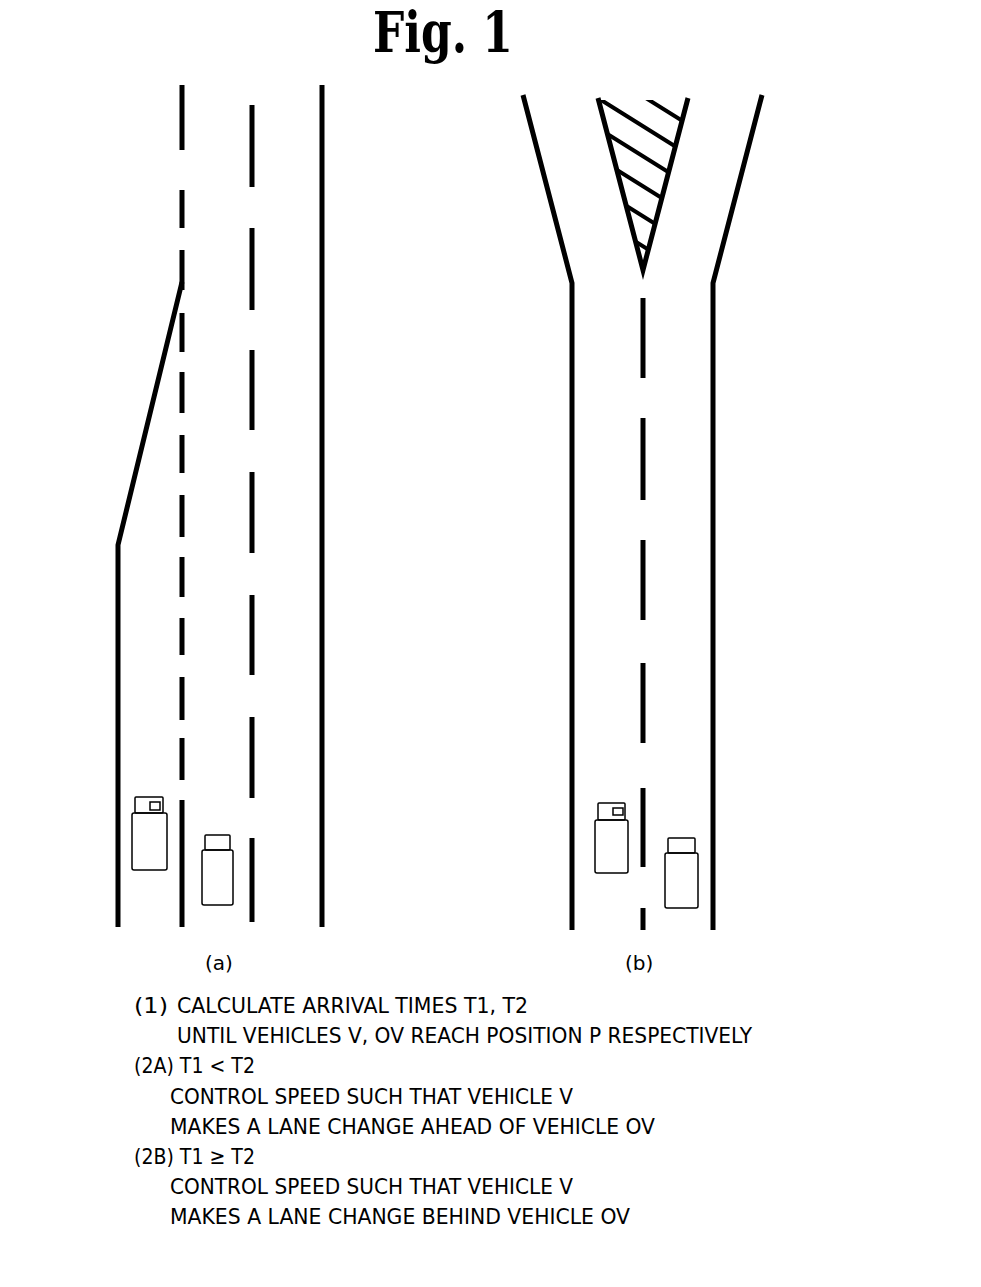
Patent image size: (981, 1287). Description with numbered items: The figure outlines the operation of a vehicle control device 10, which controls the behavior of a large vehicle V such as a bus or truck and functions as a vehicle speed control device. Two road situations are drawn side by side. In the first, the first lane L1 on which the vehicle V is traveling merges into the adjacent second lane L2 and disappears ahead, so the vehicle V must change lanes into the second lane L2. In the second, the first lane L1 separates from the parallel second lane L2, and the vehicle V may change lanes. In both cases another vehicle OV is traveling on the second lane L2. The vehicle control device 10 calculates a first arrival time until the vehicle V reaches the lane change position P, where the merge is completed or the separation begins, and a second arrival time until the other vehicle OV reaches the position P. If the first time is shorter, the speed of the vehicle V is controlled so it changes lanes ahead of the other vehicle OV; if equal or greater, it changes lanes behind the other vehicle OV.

The vehicle control device 10 is at (156, 802).
The vehicle V is at (150, 798).
The other vehicle OV is at (210, 835).
The first lane L1 is at (148, 690).
The second lane L2 is at (222, 694).
The lane change position P is at (362, 282).